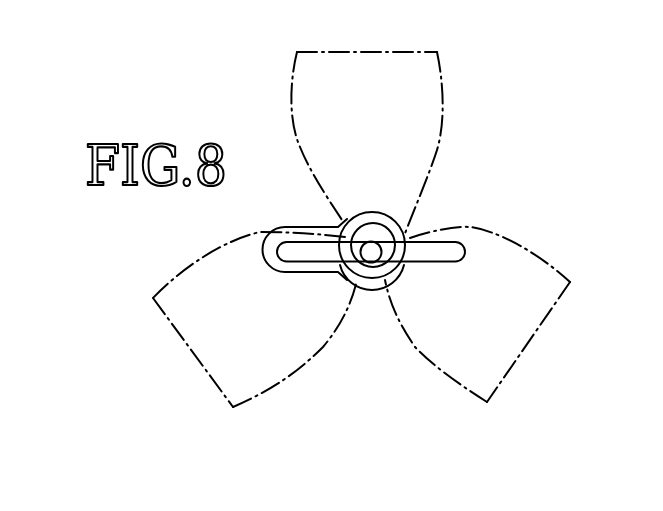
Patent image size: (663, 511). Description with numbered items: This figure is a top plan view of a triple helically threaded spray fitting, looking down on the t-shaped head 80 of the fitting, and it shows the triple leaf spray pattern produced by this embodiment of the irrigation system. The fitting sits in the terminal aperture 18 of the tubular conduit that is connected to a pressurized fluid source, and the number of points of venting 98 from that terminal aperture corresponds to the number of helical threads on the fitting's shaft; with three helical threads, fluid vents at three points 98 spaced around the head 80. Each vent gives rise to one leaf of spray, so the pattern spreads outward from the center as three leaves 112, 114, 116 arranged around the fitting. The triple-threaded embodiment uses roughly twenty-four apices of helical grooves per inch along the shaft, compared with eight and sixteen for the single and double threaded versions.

The terminal aperture 18 is at (368, 281).
The t-shaped head 80 is at (465, 231).
The points of venting 98 is at (383, 220).
The top blade 112 is at (432, 112).
The right blade 114 is at (530, 278).
The left blade 116 is at (297, 352).